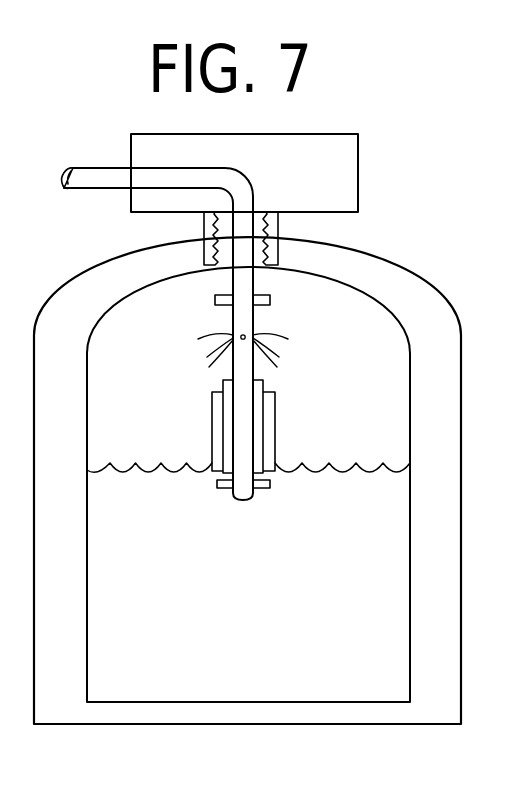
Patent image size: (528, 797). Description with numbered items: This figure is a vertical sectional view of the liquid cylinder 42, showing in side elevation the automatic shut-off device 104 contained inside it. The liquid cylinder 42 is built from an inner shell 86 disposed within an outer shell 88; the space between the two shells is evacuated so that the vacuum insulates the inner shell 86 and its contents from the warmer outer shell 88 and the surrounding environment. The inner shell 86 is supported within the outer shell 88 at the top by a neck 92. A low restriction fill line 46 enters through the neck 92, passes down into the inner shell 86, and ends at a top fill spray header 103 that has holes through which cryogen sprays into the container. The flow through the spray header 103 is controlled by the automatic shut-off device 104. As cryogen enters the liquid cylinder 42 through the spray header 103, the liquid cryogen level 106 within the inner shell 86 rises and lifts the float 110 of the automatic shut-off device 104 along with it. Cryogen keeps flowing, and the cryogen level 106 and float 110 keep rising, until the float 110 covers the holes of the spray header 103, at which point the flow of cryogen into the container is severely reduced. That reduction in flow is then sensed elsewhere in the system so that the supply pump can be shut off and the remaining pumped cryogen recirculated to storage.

The liquid cylinder 42 is at (274, 480).
The low restriction fill line 46 is at (97, 168).
The inner shell 86 is at (410, 414).
The outer shell 88 is at (458, 311).
The neck 92 is at (280, 258).
The top fill spray header 103 is at (242, 332).
The automatic shut-off device 104 is at (267, 472).
The liquid cryogen level 106 is at (148, 473).
The float 110 is at (277, 413).